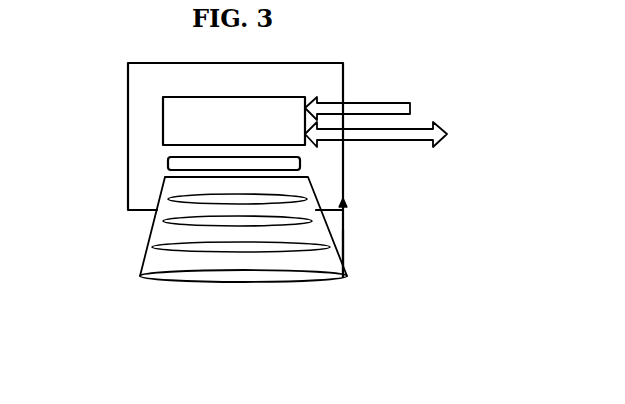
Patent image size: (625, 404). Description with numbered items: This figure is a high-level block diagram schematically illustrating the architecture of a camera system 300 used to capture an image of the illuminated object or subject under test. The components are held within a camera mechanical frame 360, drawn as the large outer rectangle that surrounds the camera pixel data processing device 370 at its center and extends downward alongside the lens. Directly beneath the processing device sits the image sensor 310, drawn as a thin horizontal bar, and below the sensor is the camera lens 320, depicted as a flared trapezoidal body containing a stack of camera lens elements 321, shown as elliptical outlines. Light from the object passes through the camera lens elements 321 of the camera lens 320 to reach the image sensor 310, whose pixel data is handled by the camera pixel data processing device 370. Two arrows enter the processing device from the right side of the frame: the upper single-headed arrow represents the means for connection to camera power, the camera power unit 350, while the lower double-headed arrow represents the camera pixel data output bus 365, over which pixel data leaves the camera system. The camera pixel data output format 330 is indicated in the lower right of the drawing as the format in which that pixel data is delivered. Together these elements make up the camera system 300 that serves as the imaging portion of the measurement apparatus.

The camera system 300 is at (272, 348).
The image sensor 310 is at (300, 162).
The camera lens 320 is at (146, 249).
The camera lens elements 321 is at (347, 240).
The camera pixel data output format 330 is at (498, 323).
The camera power unit 350 is at (410, 105).
The camera mechanical frame 360 is at (128, 124).
The camera pixel data output bus 365 is at (446, 138).
The camera pixel data processing device 370 is at (234, 121).